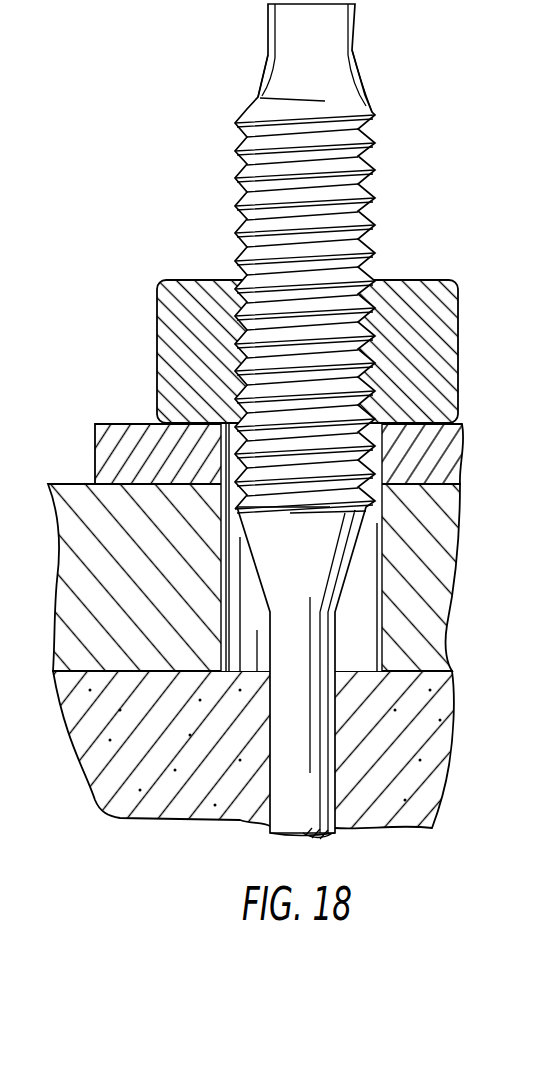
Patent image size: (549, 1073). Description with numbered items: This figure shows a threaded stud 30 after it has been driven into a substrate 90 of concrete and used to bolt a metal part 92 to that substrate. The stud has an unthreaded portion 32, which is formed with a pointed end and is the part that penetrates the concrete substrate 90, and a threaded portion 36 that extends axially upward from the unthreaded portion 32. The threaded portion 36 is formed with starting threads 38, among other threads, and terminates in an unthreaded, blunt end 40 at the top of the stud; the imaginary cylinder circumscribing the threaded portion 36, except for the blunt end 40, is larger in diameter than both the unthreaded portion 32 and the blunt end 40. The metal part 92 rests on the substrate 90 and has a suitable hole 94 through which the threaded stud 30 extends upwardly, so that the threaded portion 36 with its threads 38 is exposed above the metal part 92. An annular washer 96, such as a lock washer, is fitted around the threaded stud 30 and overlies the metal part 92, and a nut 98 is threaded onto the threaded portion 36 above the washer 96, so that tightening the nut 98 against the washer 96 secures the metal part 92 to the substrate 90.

The threaded stud 30 is at (384, 239).
The unthreaded portion 32 is at (322, 739).
The threaded portion 36 is at (362, 299).
The starting threads 38 is at (373, 163).
The blunt end 40 is at (281, 58).
The substrate 90 is at (171, 754).
The metal part 92 is at (73, 497).
The hole 94 is at (229, 573).
The annular washer 96 is at (119, 427).
The nut 98 is at (184, 291).